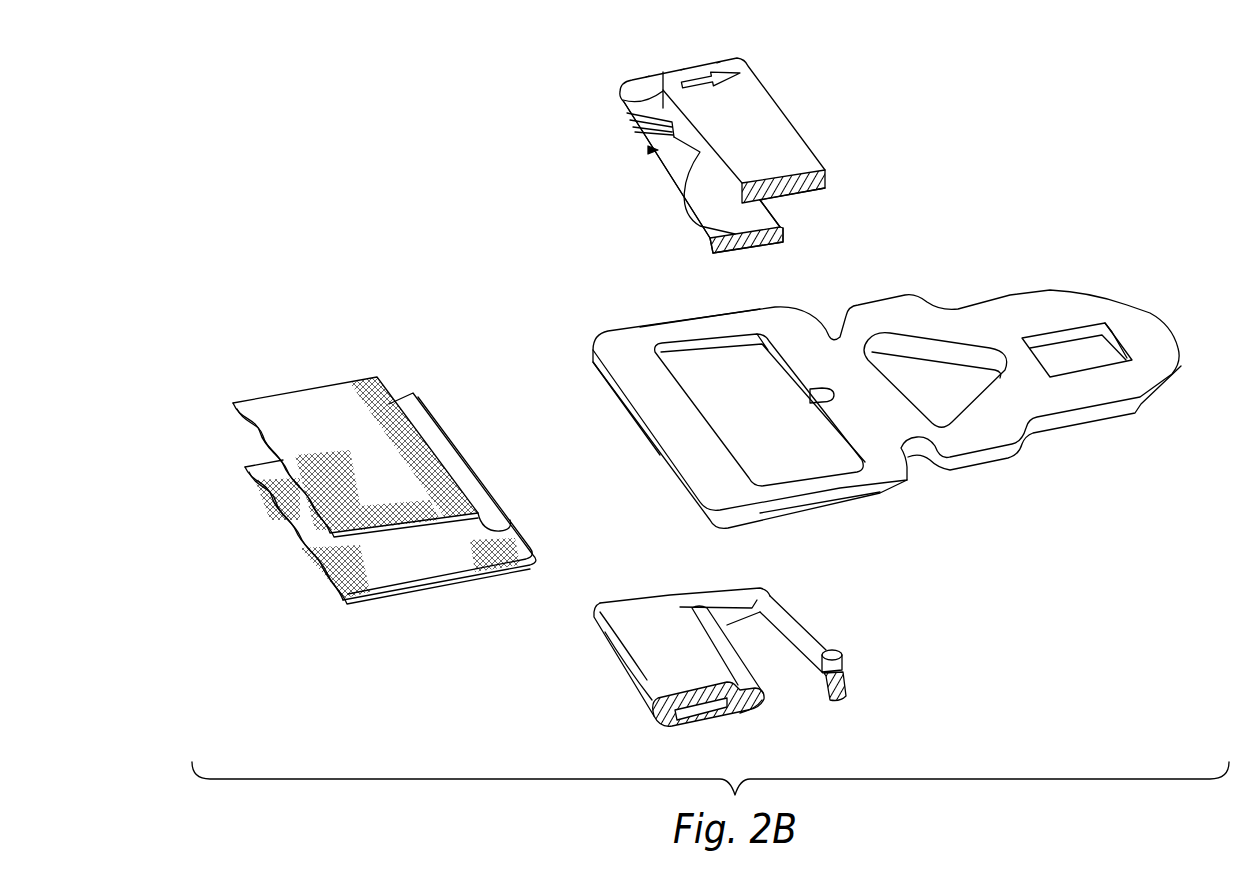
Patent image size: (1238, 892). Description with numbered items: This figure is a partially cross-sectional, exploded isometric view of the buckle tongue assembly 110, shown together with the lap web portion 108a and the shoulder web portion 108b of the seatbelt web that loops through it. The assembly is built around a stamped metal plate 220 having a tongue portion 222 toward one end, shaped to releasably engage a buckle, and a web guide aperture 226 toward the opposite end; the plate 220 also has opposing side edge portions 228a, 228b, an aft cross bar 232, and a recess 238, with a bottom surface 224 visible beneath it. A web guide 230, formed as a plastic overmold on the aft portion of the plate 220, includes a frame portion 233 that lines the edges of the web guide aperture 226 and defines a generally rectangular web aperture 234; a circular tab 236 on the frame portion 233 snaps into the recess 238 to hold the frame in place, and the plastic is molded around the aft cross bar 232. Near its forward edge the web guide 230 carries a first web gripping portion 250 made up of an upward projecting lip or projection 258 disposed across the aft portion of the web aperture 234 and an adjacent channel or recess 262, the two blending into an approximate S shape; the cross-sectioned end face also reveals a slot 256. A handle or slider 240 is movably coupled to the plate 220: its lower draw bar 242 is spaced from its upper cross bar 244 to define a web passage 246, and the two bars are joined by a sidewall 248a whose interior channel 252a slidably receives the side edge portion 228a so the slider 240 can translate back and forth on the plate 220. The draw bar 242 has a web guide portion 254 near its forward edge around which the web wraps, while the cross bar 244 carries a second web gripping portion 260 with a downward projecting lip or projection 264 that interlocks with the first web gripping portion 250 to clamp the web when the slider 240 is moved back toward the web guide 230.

The lap web portion 108a is at (383, 580).
The shoulder web portion 108b is at (305, 395).
The buckle tongue assembly 110 is at (1017, 169).
The plate 220 is at (990, 440).
The tongue portion 222 is at (1055, 300).
The bottom surface of base plate 224 is at (727, 500).
The web guide aperture 226 is at (680, 383).
The side edge portion 228a is at (740, 303).
The side edge portion 228b is at (857, 497).
The web guide 230 is at (617, 660).
The aft cross bar 232 is at (595, 365).
The frame portion 233 is at (722, 600).
The web aperture 234 is at (783, 630).
The tab 236 is at (835, 650).
The recess 238 is at (818, 390).
The slider 240 is at (738, 63).
The draw bar 242 is at (766, 250).
The cross bar 244 is at (783, 137).
The web passage 246 is at (646, 150).
The sidewall 248a is at (623, 99).
The first web gripping portion 250 is at (760, 680).
The channel 252a is at (627, 111).
The web guide portion 254 is at (777, 222).
The slot 256 is at (700, 710).
The projection 258 is at (760, 705).
The second web gripping portion 260 is at (700, 153).
The recess 262 is at (740, 690).
The projection 264 is at (712, 224).